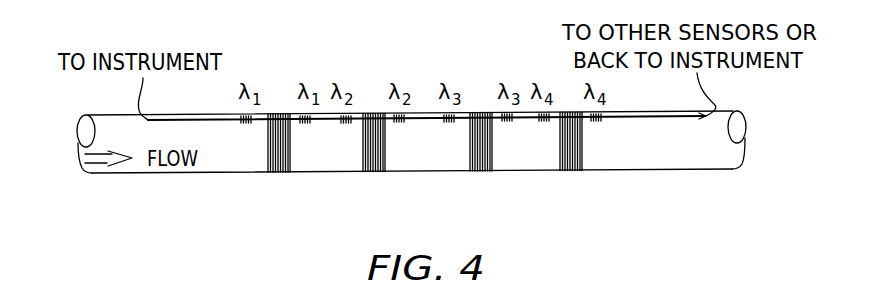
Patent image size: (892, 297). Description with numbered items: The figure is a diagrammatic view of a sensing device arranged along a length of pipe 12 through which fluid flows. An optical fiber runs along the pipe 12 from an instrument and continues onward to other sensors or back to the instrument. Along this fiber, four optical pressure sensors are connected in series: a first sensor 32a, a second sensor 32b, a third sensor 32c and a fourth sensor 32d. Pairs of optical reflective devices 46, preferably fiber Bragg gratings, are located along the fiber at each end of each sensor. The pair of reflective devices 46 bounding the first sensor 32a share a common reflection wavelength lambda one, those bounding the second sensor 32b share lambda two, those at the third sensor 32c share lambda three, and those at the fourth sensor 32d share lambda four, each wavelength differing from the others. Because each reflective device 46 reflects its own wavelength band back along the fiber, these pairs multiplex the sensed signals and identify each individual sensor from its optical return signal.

The pipe 12 is at (699, 153).
The optical reflective device 46 is at (248, 126).
The first sensor 32a is at (282, 173).
The second sensor 32b is at (377, 172).
The third sensor 32c is at (482, 172).
The fourth sensor 32d is at (572, 171).